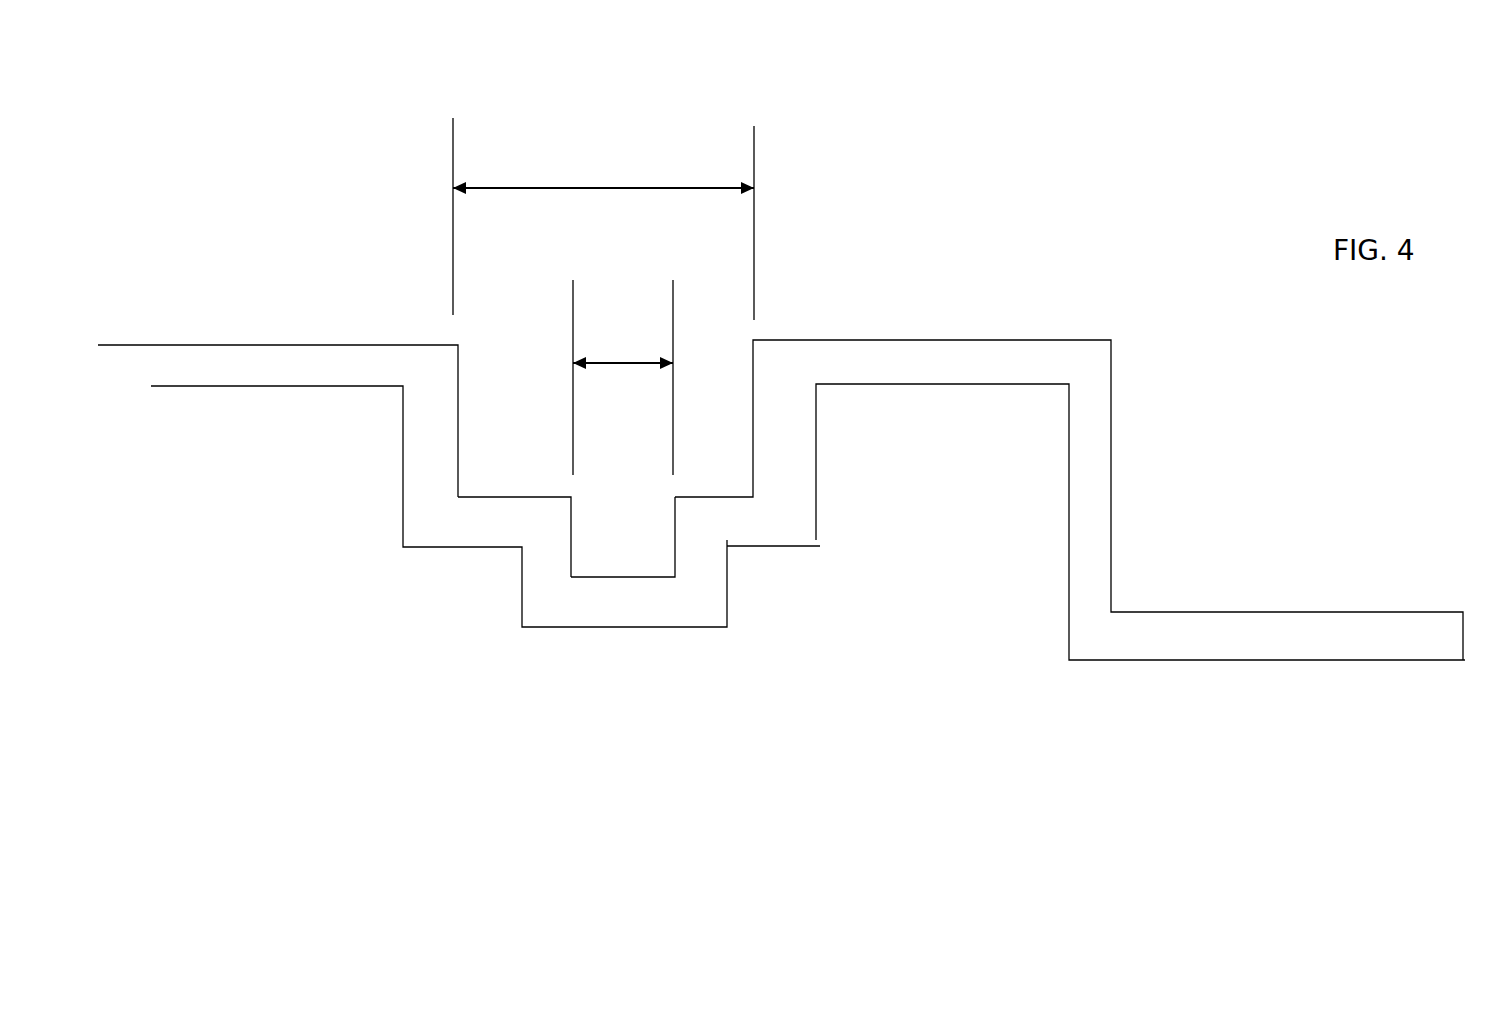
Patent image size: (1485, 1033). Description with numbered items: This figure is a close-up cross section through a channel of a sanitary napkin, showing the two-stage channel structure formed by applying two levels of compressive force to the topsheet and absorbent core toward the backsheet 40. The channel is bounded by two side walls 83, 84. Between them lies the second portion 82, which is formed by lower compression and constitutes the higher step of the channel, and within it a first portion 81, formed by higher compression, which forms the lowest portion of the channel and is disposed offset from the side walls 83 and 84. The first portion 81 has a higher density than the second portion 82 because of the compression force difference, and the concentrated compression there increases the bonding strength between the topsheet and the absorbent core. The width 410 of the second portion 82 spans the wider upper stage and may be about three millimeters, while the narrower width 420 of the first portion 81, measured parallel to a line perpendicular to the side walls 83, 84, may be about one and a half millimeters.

The backsheet 40 is at (772, 548).
The first portion 81 is at (622, 579).
The second portion 82 is at (514, 497).
The side wall 83 is at (458, 412).
The side wall 84 is at (753, 383).
The width of second portion 410 is at (638, 188).
The width of first portion 420 is at (634, 358).